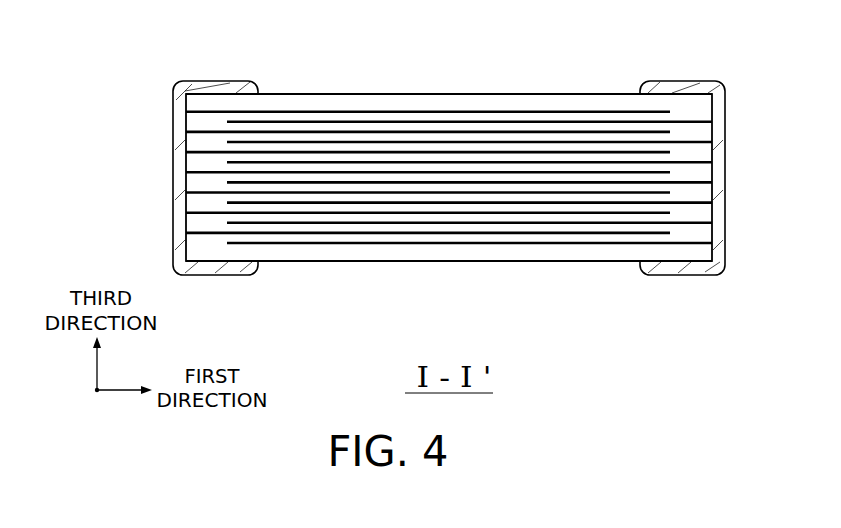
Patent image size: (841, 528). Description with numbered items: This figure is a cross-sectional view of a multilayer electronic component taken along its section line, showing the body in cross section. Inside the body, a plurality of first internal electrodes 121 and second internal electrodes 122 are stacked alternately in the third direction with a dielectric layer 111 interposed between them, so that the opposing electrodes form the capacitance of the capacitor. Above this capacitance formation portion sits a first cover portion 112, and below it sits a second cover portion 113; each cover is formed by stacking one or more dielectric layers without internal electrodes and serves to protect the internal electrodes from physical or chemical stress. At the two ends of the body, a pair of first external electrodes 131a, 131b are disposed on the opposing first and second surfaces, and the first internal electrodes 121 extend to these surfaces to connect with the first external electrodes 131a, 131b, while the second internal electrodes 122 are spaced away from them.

The dielectric layer 111 is at (517, 121).
The first cover portion 112 is at (348, 99).
The second cover portion 113 is at (349, 258).
The first internal electrode 121 is at (460, 111).
The second internal electrode 122 is at (570, 121).
The first external electrode 131a is at (224, 83).
The first external electrode 131b is at (679, 85).